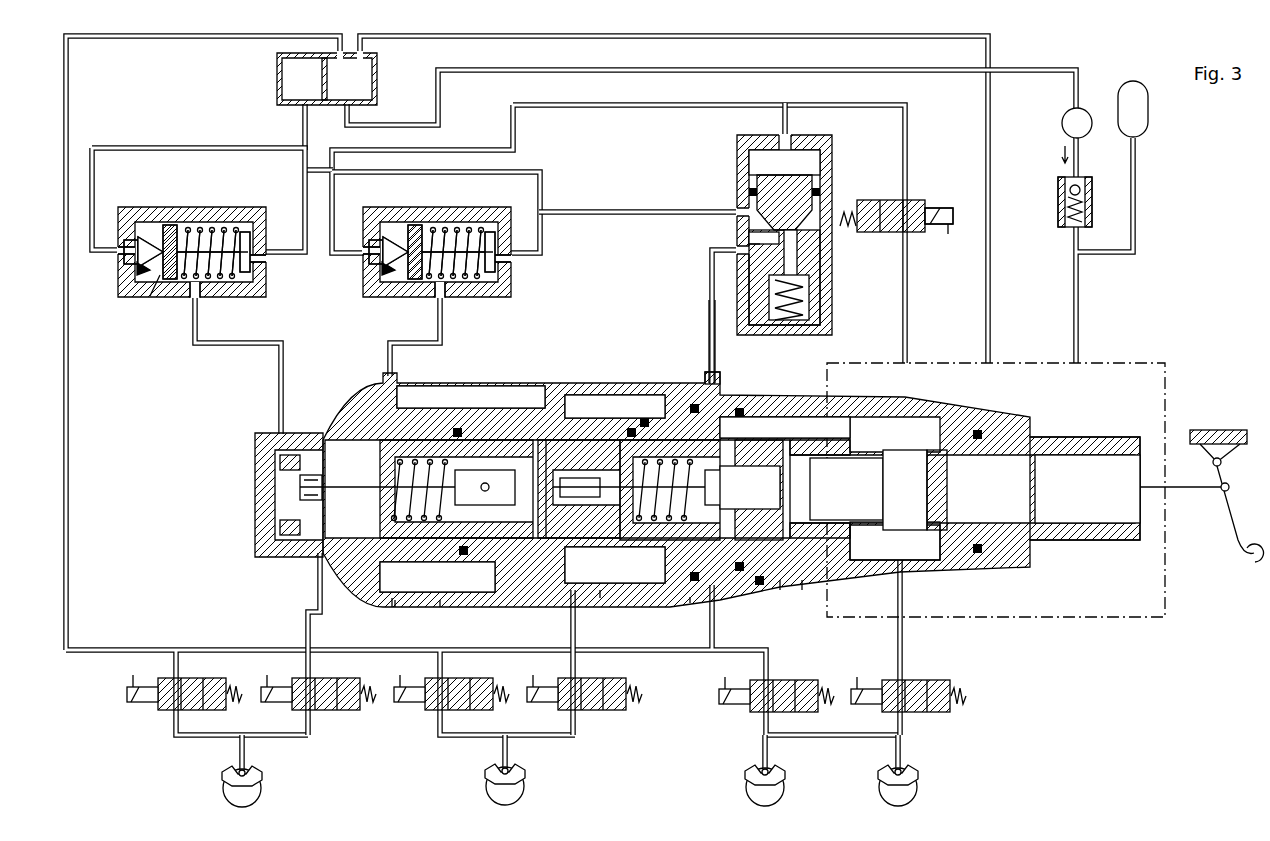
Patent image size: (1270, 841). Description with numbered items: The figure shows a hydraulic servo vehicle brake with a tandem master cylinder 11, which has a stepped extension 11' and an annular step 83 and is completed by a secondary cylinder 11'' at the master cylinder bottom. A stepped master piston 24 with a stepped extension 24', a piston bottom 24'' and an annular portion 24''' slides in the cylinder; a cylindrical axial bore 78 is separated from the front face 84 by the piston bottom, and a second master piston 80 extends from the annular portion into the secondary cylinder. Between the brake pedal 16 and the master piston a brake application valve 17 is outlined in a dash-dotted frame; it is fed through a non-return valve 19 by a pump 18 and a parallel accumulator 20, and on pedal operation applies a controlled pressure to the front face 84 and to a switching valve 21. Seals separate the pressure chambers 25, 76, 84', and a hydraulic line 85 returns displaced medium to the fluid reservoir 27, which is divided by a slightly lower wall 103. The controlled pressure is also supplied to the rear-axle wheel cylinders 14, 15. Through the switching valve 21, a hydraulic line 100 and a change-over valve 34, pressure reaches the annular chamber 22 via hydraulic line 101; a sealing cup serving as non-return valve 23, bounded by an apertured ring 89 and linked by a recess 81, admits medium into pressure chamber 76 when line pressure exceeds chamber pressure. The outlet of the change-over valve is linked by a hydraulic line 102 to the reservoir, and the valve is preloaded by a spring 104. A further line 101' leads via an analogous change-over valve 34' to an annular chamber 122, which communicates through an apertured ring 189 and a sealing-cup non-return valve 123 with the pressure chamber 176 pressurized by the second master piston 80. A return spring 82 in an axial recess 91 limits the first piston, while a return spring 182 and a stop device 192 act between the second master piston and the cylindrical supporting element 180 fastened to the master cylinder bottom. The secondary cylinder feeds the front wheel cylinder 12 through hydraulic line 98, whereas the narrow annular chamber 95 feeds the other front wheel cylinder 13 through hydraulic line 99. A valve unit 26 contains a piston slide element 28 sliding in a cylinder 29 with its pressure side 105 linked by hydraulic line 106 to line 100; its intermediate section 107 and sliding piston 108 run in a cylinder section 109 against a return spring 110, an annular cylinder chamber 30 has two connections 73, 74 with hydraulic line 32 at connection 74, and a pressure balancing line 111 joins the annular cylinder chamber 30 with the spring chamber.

The master cylinder 11 is at (731, 476).
The stepped extension of the master cylinder 11' is at (683, 619).
The secondary cylinder 11'' is at (405, 621).
The front-axle wheel cylinder 12 is at (224, 780).
The front-axle wheel cylinder 13 is at (487, 778).
The rear-axle wheel cylinder 14 is at (747, 780).
The rear-axle wheel cylinder 15 is at (880, 780).
The brake pedal 16 is at (1236, 550).
The brake application valve 17 is at (1135, 370).
The pump 18 is at (1060, 123).
The non-return valve 19 is at (1058, 201).
The accumulator 20 is at (1148, 110).
The switching valve 21 is at (890, 200).
The annular chamber 22 is at (455, 386).
The non-return valve 23 is at (640, 402).
The master piston 24 is at (778, 606).
The stepped extension of the master piston 24' is at (483, 385).
The piston bottom 24'' is at (810, 606).
The annular portion 24''' is at (617, 616).
The pressure chamber 25 is at (722, 380).
The control valve 26 is at (725, 141).
The fluid reservoir 27 is at (279, 96).
The piston slide element 28 is at (760, 170).
The cylinder 29 is at (752, 190).
The annular cylinder chamber 30 is at (757, 237).
The hydraulic line 32 is at (709, 331).
The change-over valve 34 is at (436, 235).
The further change-over valve 34' is at (205, 236).
The connection 73 is at (740, 214).
The connection 74 is at (735, 256).
The pressure chamber 76 is at (772, 415).
The cylindrical axial bore 78 is at (738, 582).
The second master piston 80 is at (508, 593).
The recess 81 is at (530, 382).
The return spring 82 is at (660, 395).
The annular step 83 is at (745, 405).
The front face 84 is at (1017, 453).
The pressure chamber 84' is at (895, 628).
The hydraulic line 85 is at (990, 292).
The apertured ring 89 is at (612, 410).
The axial recess 91 is at (698, 382).
The annular chamber 95 is at (642, 590).
The hydraulic line 98 is at (305, 626).
The hydraulic line 99 is at (570, 633).
The hydraulic line 100 is at (583, 108).
The hydraulic line 101 is at (238, 365).
The further line 101' is at (198, 183).
The hydraulic line 102 is at (302, 126).
The wall 103 is at (322, 75).
The spring 104 is at (160, 300).
The pressure side 105 is at (805, 164).
The hydraulic line 106 is at (790, 125).
The intermediate section 107 is at (800, 250).
The sliding piston 108 is at (806, 282).
The cylinder section 109 is at (806, 316).
The return spring 110 is at (772, 297).
The pressure balancing line 111 is at (748, 243).
The annular chamber 122 is at (278, 530).
The non-return valve 123 is at (295, 452).
The pressure chamber 176 is at (348, 442).
The cylindrical supporting element 180 is at (302, 560).
The return spring 182 is at (387, 378).
The apertured ring 189 is at (262, 450).
The stop device 192 is at (392, 602).